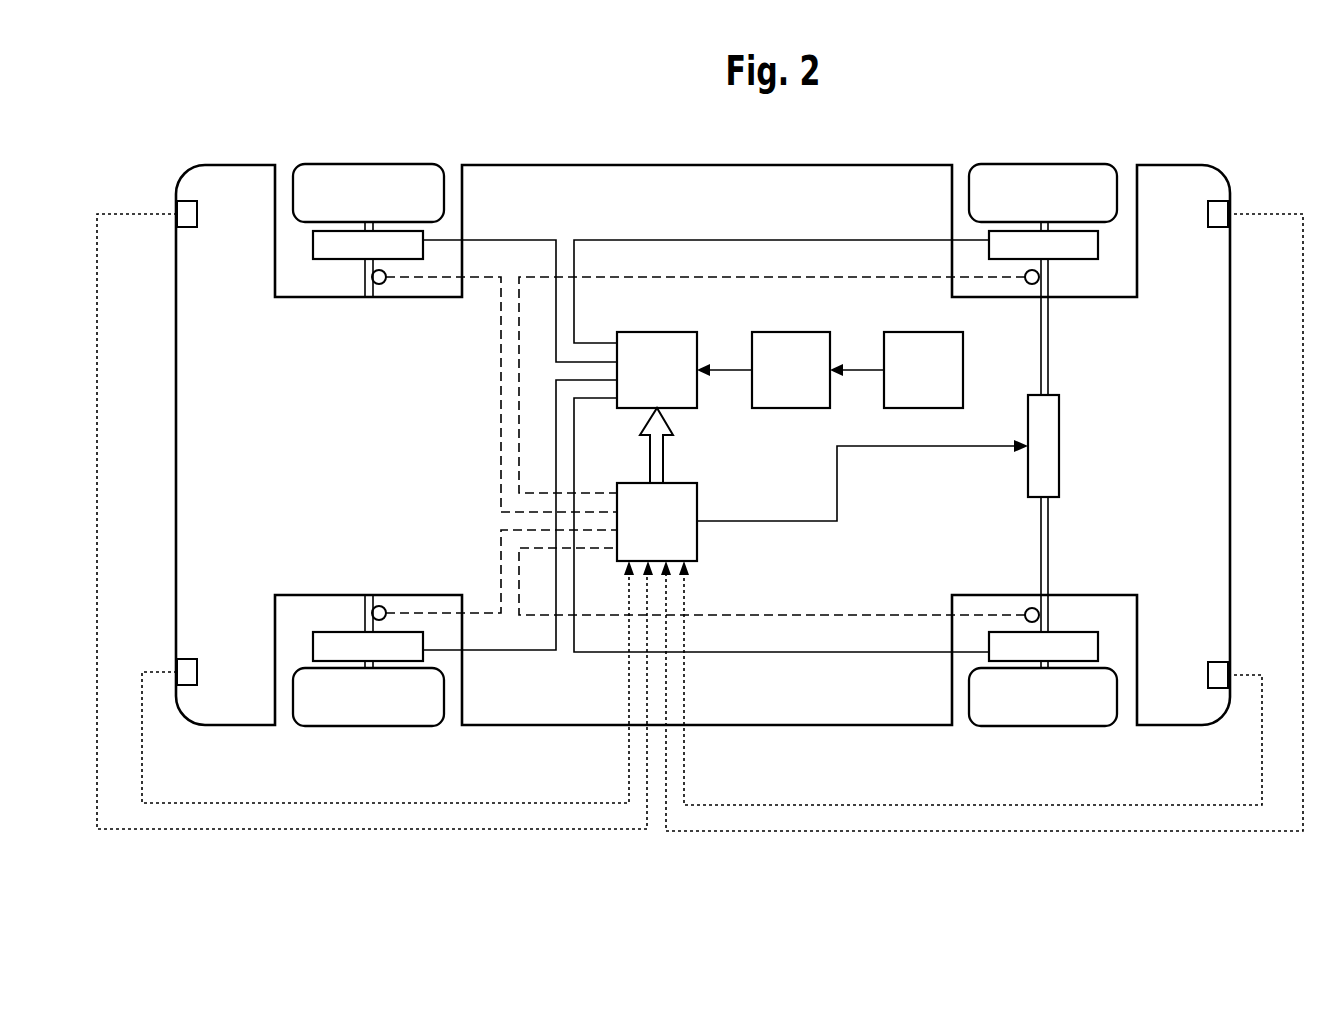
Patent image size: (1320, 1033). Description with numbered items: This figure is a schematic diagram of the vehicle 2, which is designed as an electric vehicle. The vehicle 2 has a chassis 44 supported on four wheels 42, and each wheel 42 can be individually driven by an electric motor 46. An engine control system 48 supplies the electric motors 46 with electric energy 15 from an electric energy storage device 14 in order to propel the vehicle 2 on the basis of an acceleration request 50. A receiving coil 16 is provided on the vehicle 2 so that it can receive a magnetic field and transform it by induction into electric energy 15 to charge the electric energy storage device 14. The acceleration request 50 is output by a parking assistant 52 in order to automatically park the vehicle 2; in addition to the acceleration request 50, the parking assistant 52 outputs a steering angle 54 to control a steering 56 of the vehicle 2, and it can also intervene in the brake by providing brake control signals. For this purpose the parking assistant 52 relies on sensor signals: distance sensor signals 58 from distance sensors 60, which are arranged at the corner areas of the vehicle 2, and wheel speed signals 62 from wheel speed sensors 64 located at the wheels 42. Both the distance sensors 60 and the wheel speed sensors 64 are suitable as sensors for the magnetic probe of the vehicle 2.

The vehicle 2 is at (175, 112).
The electric energy storage device 14 is at (798, 347).
The electric energy 15 is at (526, 240).
The receiving coil 16 is at (927, 347).
The wheels 42 is at (368, 172).
The chassis 44 is at (692, 165).
The electric motor 46 is at (342, 262).
The engine control system 48 is at (658, 347).
The acceleration request 50 is at (664, 456).
The parking assistant 52 is at (697, 495).
The steering angle 54 is at (838, 487).
The steering 56 is at (1050, 428).
The distance sensor signals 58 is at (135, 212).
The distance sensors 60 is at (188, 222).
The wheel speed signals 62 is at (488, 283).
The wheel speed sensors 64 is at (381, 286).